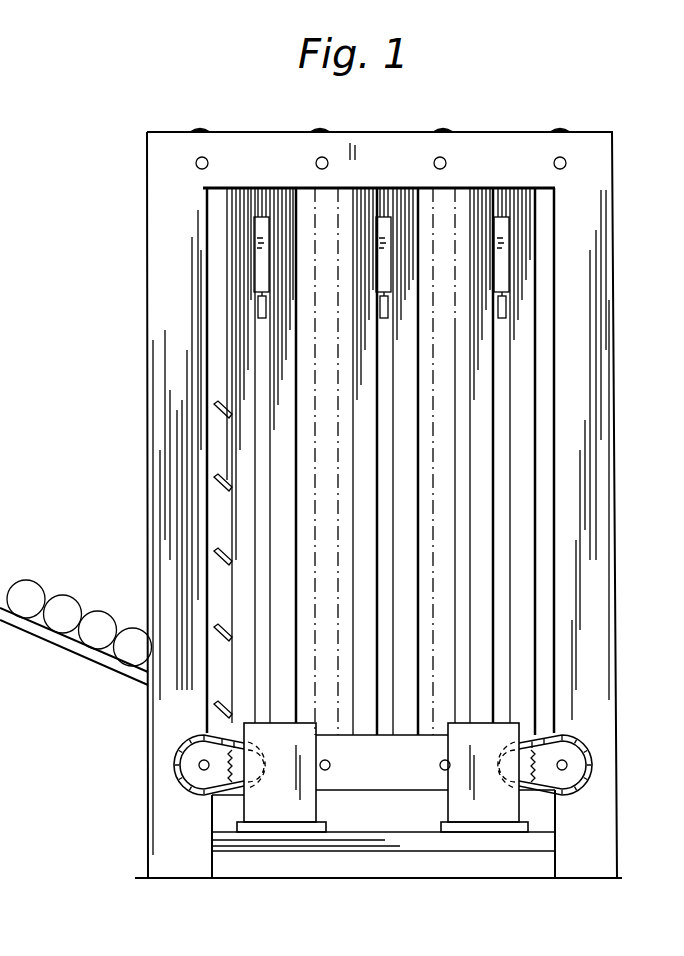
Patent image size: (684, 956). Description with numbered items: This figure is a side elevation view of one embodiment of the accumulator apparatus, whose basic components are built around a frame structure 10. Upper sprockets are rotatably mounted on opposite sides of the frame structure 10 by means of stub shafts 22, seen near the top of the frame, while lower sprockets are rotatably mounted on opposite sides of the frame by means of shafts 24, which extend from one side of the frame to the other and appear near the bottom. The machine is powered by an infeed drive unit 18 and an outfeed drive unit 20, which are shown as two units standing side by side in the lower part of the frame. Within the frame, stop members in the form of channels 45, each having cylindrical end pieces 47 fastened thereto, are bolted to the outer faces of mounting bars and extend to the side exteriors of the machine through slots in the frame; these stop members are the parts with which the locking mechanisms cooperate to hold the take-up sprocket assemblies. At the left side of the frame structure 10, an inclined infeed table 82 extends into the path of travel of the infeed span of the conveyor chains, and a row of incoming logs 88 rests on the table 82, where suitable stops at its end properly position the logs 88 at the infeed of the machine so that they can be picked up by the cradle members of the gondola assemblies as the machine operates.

The frame structure 10 is at (623, 387).
The infeed drive unit 18 is at (331, 815).
The outfeed drive unit 20 is at (538, 811).
The stub shafts 22 is at (316, 163).
The shafts 24 is at (199, 765).
The channel 45 is at (266, 260).
The cylindrical end pieces 47 is at (264, 317).
The inclined infeed table 82 is at (90, 665).
The logs 88 is at (98, 622).